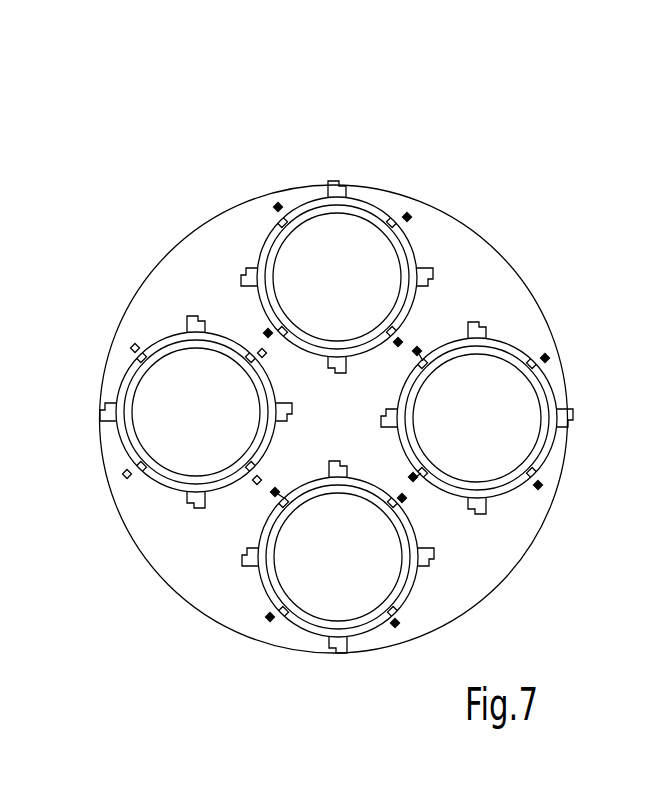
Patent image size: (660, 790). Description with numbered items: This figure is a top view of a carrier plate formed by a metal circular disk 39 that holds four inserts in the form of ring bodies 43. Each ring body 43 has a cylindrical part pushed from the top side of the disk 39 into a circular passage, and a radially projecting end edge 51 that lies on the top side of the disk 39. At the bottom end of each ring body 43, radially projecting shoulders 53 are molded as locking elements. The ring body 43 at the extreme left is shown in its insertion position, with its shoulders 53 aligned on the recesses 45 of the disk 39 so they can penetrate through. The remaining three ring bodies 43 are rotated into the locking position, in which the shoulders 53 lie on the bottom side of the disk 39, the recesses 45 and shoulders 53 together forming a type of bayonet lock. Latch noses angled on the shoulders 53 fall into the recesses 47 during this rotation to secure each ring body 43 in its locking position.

The circular disk 39 is at (496, 250).
The ring body 43 is at (393, 250).
The recess 45 is at (341, 193).
The recess 47 is at (275, 204).
The radially projecting end edge 51 is at (307, 205).
The radially projecting shoulder 53 is at (197, 318).